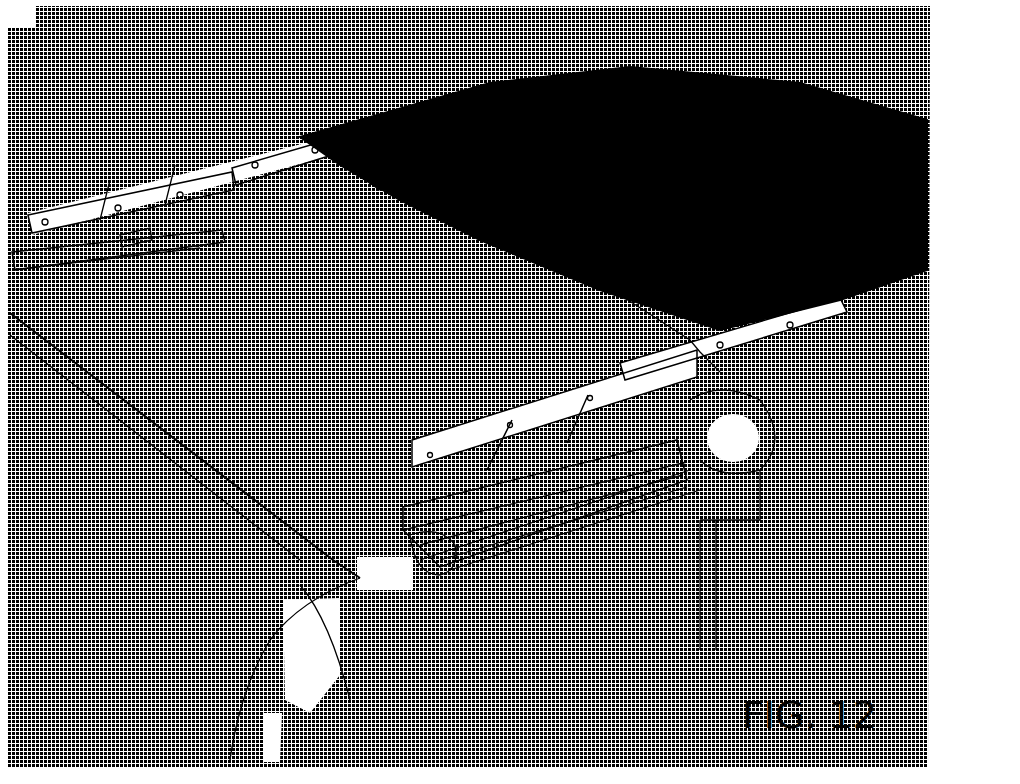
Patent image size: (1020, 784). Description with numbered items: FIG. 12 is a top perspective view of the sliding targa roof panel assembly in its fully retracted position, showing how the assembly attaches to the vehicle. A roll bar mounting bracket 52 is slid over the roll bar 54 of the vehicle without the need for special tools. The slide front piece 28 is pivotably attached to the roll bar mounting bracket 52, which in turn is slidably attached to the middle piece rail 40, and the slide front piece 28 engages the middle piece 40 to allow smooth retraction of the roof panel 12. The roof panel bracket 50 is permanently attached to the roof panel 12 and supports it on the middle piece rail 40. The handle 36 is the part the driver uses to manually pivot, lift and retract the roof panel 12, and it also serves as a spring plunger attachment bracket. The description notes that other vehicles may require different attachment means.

The roof panel 12 is at (350, 120).
The slide front piece 28 is at (147, 173).
The handle 36 is at (390, 140).
The middle piece rail 40 is at (270, 163).
The roof panel bracket 50 is at (493, 97).
The roll bar mounting bracket 52 is at (37, 247).
The roll bar 54 is at (140, 235).